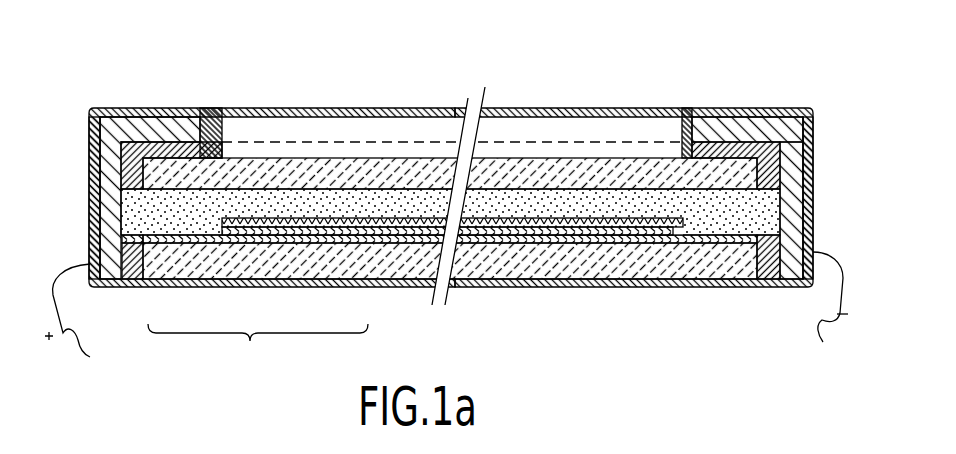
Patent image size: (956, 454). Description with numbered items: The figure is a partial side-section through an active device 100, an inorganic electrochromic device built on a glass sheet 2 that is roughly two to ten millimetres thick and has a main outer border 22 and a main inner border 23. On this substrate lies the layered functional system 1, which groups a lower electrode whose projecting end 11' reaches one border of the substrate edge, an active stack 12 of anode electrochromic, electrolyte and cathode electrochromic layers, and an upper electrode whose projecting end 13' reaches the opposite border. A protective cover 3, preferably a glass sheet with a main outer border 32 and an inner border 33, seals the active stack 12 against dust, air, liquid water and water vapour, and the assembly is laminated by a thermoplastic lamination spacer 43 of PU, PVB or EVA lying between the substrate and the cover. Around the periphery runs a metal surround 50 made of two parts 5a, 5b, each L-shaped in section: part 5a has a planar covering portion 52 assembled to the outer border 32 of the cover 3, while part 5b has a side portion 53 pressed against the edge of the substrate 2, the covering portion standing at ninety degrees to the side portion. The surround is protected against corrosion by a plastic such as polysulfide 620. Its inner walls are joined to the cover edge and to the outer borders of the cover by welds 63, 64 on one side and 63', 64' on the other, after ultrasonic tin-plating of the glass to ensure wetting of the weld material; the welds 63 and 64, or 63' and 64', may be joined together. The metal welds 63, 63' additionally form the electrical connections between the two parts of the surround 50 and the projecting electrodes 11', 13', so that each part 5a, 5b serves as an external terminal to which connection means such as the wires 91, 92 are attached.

The active device 100 is at (330, 93).
The metal surround 50 is at (86, 138).
The covering portion 52 is at (812, 128).
The surround part 5a is at (140, 108).
The surround part 5b is at (760, 107).
The side portion 53 is at (793, 212).
The polysulfide 620 is at (93, 199).
The weld 64 is at (208, 103).
The weld 64' is at (702, 103).
The metal weld 63 is at (86, 255).
The metal weld 63' is at (774, 284).
The protective cover 3 is at (530, 165).
The main outer border of the cover 32 is at (620, 200).
The inner border of the cover 33 is at (620, 200).
The lamination spacer 43 is at (393, 205).
The glass sheet 2 is at (500, 262).
The main outer border of the glass sheet 22 is at (562, 279).
The inner border of the glass sheet 23 is at (624, 240).
The electrode assembly 1 is at (258, 348).
The projecting lower electrode 11' is at (149, 284).
The active stack 12 is at (322, 252).
The projecting upper electrode 13' is at (336, 280).
The wire 91 is at (81, 316).
The wire 92 is at (826, 311).